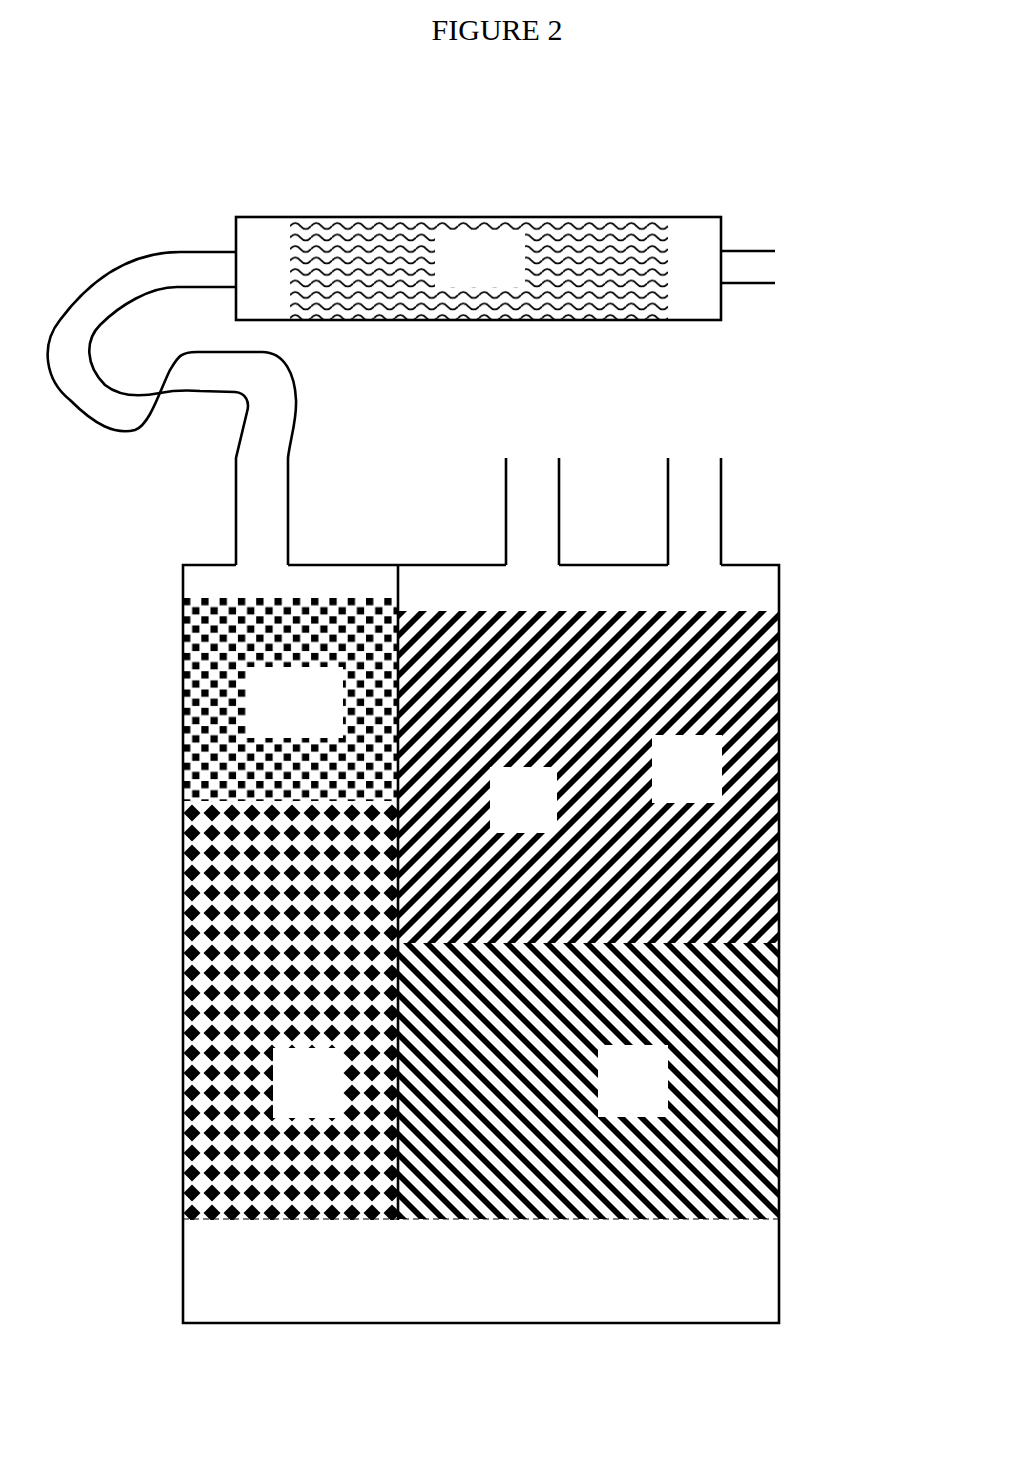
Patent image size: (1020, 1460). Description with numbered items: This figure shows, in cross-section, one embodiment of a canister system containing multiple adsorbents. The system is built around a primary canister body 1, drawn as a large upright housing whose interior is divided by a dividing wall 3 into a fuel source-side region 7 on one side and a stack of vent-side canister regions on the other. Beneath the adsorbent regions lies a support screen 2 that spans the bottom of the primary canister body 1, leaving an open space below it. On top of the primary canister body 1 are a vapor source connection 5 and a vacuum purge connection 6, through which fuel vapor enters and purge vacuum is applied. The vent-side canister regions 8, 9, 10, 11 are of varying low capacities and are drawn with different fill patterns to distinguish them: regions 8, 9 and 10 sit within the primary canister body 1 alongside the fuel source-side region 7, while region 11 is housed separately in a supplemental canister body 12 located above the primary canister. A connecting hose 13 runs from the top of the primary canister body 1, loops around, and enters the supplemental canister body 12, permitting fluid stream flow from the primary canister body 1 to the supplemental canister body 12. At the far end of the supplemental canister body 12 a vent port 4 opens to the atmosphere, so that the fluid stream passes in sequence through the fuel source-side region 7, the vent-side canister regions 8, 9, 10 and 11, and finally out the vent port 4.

The primary canister body 1 is at (783, 716).
The support screen 2 is at (743, 1222).
The dividing wall 3 is at (405, 720).
The vent port 4 is at (783, 272).
The vapor source connection 5 is at (562, 480).
The vacuum purge connection 6 is at (728, 488).
The fuel source-side region 7 is at (588, 777).
The vent-side canister region 8 is at (588, 1081).
The vent-side canister region 9 is at (290, 1010).
The vent-side canister region 10 is at (290, 699).
The vent-side canister region 11 is at (479, 269).
The supplemental canister body 12 is at (693, 325).
The connecting hose 13 is at (306, 398).